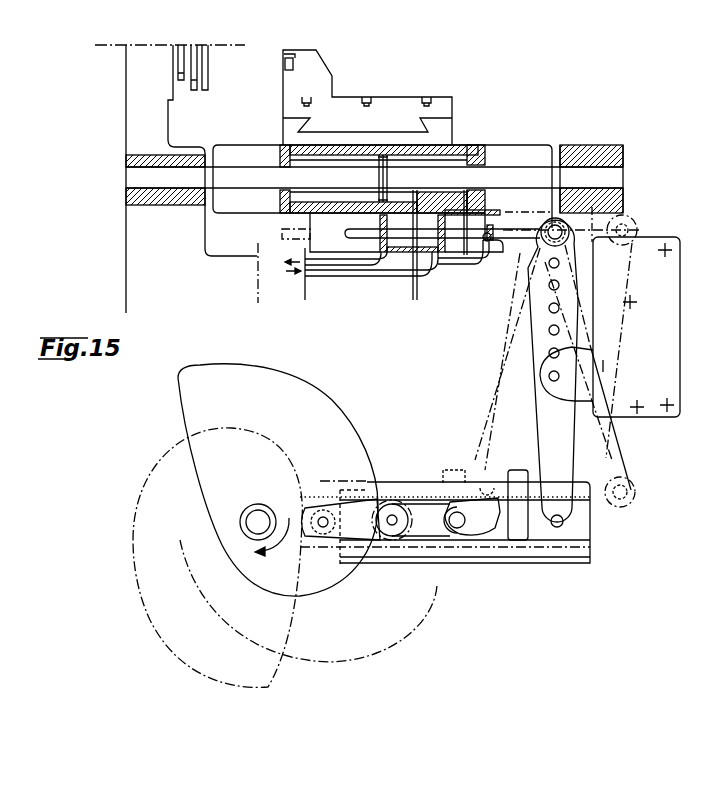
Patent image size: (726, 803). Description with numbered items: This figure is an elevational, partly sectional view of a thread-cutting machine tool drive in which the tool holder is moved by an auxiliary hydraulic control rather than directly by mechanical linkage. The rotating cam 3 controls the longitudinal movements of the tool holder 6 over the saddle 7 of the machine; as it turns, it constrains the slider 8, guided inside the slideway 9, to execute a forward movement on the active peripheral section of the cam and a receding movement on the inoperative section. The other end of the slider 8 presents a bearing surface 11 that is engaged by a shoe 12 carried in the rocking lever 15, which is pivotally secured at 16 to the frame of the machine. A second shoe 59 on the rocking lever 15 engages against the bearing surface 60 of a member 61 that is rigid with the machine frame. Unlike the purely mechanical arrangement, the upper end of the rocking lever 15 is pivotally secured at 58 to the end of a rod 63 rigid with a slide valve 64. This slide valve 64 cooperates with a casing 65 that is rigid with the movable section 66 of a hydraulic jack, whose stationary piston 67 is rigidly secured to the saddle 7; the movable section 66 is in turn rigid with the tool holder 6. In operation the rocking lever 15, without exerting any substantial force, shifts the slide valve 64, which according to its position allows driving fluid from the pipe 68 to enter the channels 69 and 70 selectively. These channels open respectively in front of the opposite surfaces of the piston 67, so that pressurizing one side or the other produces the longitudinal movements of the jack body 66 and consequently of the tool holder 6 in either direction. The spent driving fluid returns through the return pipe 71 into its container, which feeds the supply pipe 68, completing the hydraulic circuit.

The cam 3 is at (280, 393).
The tool holder 6 is at (447, 128).
The saddle 7 is at (178, 147).
The slider 8 is at (437, 535).
The slideway 9 is at (388, 493).
The bearing surface 11 is at (470, 535).
The shoe 12 is at (538, 540).
The rocking lever 15 is at (518, 437).
The pivot of rocking lever 16 is at (552, 377).
The pivot of rocking lever upper end 58 is at (567, 230).
The shoe 59 is at (580, 392).
The bearing surface 60 is at (592, 344).
The member 61 is at (655, 412).
The rod 63 is at (510, 240).
The slide valve 64 is at (433, 213).
The casing 65 is at (462, 232).
The movable section of hydraulic jack 66 is at (463, 150).
The stationary piston 67 is at (387, 153).
The pipe 68 is at (367, 271).
The channel 69 is at (333, 213).
The channel 70 is at (488, 207).
The return pipe 71 is at (330, 264).